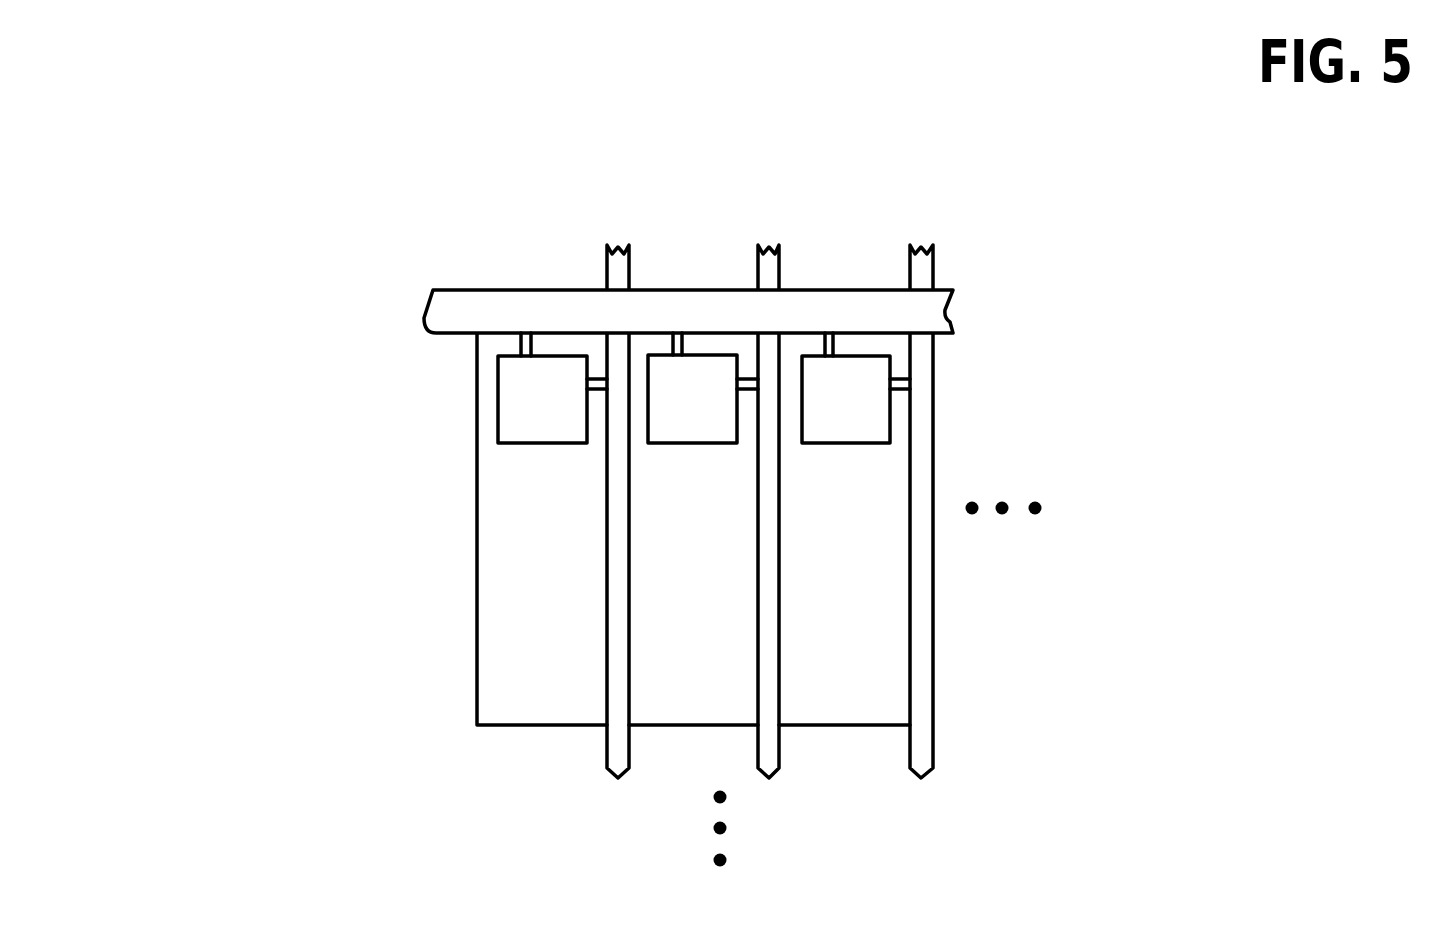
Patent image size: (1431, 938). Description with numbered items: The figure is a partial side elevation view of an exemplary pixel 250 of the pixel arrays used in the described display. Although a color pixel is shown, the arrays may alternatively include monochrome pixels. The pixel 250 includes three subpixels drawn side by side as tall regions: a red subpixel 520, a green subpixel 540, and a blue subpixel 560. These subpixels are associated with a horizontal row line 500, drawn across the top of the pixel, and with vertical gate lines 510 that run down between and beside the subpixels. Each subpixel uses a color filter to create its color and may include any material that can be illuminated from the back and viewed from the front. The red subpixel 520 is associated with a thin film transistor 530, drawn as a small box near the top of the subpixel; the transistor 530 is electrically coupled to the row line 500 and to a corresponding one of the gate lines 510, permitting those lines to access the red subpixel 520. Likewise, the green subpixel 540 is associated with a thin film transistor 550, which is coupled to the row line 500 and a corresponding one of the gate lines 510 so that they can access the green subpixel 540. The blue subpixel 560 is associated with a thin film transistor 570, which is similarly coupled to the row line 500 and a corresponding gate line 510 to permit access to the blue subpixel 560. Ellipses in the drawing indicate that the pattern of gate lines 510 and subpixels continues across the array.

The pixel 250 is at (152, 53).
The row line 500 is at (930, 312).
The gate lines 510 is at (910, 263).
The red subpixel 520 is at (516, 636).
The thin film transistor 530 is at (517, 413).
The green subpixel 540 is at (669, 636).
The thin film transistor 550 is at (669, 413).
The blue subpixel 560 is at (821, 636).
The thin film transistor 570 is at (821, 413).